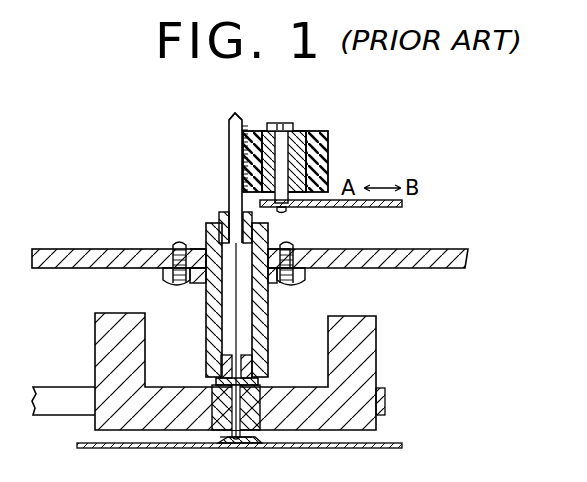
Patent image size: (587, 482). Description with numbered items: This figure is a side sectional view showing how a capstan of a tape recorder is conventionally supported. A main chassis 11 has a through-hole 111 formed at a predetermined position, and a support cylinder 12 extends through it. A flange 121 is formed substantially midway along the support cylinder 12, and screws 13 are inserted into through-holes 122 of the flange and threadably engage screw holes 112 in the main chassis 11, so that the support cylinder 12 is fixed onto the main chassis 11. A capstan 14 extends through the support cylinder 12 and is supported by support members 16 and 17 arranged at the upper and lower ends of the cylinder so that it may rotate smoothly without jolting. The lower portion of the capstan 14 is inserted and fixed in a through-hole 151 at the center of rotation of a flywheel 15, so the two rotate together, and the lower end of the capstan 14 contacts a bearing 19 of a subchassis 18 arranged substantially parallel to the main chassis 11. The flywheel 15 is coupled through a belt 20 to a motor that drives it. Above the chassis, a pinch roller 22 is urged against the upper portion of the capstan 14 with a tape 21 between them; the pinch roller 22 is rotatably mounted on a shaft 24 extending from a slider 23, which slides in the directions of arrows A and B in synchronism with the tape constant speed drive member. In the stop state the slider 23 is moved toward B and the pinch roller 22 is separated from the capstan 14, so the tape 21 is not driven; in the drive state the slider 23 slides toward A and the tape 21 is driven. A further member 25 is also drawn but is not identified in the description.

The main chassis 11 is at (58, 250).
The through-hole 111 is at (203, 240).
The screw holes 112 is at (172, 244).
The support cylinder 12 is at (268, 335).
The flange 121 is at (305, 273).
The through-holes 122 is at (163, 276).
The screws 13 is at (197, 284).
The capstan 14 is at (228, 142).
The flywheel 15 is at (377, 355).
The through-hole 151 is at (250, 438).
The support member 16 is at (222, 218).
The support member 17 is at (253, 360).
The subchassis 18 is at (338, 448).
The bearing 19 is at (218, 442).
The belt 20 is at (67, 396).
The tape 21 is at (240, 118).
The pinch roller 22 is at (330, 158).
The slider 23 is at (368, 210).
The shaft 24 is at (282, 122).
The insert member 25 is at (305, 128).